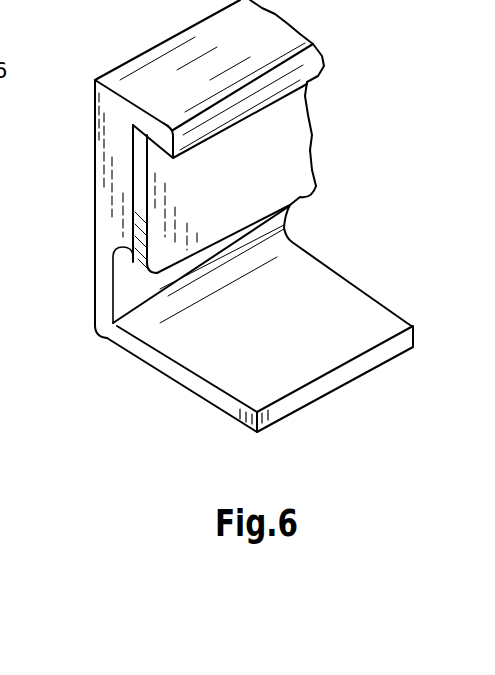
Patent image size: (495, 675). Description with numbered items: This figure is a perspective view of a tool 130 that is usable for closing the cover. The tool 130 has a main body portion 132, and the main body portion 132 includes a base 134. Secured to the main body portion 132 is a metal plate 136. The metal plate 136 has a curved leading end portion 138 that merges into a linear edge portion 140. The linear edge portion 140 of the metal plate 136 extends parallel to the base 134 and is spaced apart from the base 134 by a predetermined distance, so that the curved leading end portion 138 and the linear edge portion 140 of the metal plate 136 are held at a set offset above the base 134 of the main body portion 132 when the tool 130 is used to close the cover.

The tool 130 is at (386, 247).
The main body portion 132 is at (91, 283).
The base 134 is at (223, 398).
The metal plate 136 is at (315, 128).
The curved leading end portion 138 is at (143, 278).
The linear edge portion 140 is at (300, 196).